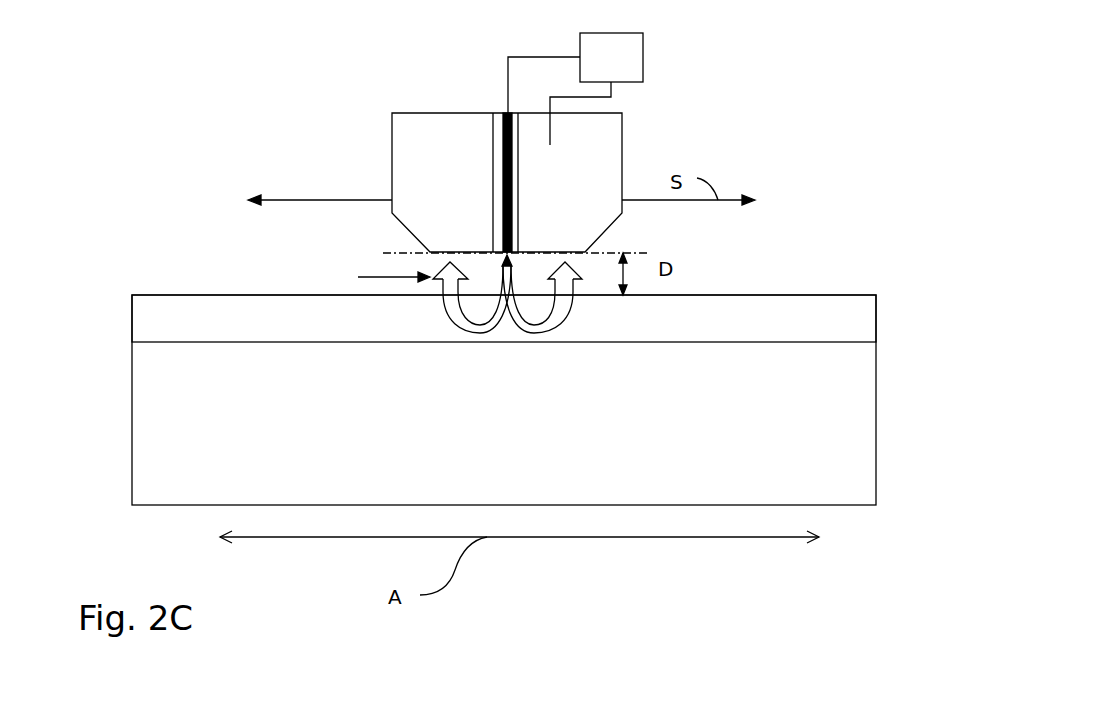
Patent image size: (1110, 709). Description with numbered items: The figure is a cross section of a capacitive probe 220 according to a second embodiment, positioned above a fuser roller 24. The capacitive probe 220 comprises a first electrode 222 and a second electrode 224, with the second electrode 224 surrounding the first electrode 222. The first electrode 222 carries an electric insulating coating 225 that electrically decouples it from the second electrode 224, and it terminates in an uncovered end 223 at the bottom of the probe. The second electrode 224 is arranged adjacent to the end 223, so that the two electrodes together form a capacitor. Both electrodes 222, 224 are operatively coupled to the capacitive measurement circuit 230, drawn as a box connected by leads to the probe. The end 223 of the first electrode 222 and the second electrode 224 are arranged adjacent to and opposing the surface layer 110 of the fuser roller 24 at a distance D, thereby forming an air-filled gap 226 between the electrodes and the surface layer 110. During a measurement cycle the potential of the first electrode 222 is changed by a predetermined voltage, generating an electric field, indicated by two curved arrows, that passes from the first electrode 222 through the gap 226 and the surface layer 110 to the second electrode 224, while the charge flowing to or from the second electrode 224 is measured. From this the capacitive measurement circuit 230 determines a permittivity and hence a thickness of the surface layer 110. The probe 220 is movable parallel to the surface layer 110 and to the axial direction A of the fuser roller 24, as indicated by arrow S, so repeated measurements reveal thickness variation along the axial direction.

The capacitive probe 220 is at (392, 183).
The first electrode 222 is at (508, 113).
The uncovered end 223 is at (535, 298).
The second electrode 224 is at (610, 162).
The electric insulating coating 225 is at (493, 183).
The gap 226 is at (371, 276).
The capacitive measurement circuit 230 is at (643, 57).
The surface layer 110 is at (187, 303).
The fuser roller 24 is at (504, 400).